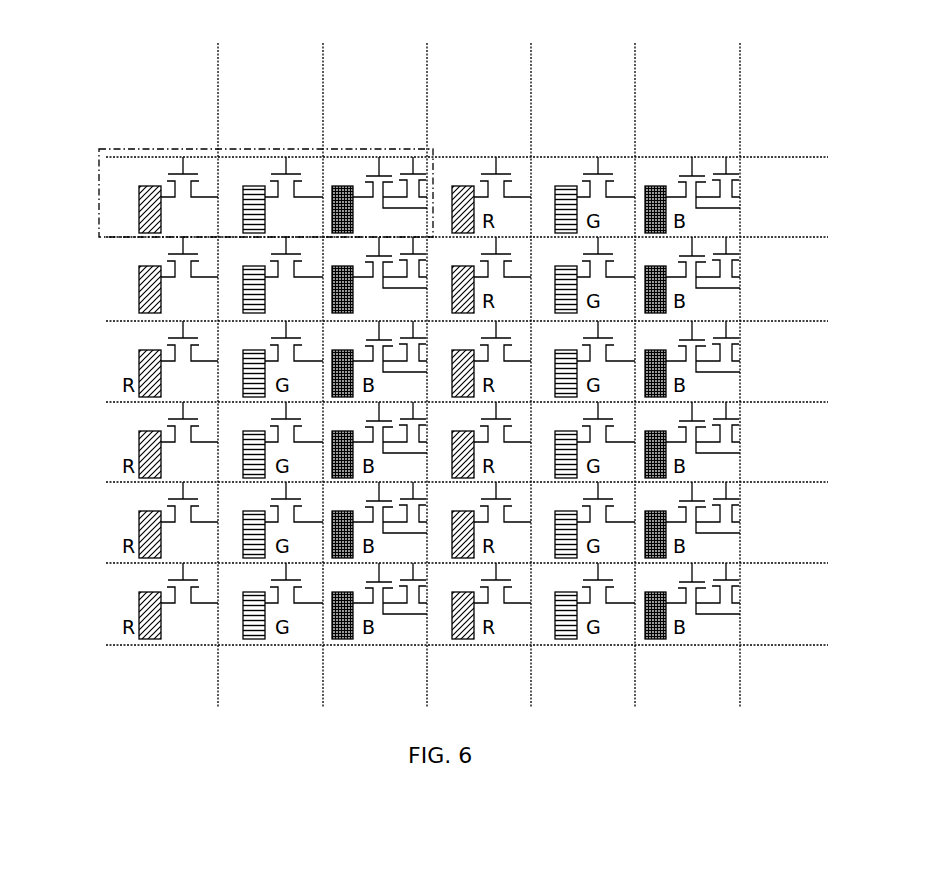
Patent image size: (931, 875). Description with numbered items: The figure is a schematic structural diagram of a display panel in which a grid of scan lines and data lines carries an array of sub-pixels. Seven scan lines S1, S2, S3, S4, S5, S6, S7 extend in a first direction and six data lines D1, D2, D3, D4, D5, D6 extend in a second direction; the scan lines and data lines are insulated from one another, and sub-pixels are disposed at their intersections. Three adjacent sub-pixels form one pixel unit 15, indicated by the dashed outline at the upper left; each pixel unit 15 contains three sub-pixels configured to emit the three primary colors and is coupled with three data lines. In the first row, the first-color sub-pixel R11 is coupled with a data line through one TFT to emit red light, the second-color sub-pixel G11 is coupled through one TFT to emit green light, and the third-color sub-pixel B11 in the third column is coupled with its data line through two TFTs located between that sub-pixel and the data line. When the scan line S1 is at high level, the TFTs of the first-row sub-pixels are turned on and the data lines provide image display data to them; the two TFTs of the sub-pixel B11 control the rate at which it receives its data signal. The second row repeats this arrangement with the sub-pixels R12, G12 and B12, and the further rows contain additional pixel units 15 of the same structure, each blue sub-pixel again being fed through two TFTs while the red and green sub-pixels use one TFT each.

The pixel unit 15 is at (123, 148).
The data line D1 is at (220, 357).
The data line D2 is at (323, 357).
The data line D3 is at (427, 357).
The data line D4 is at (532, 357).
The data line D5 is at (636, 357).
The data line D6 is at (742, 357).
The scan line S1 is at (445, 162).
The scan line S2 is at (445, 237).
The scan line S3 is at (445, 317).
The scan line S4 is at (445, 402).
The scan line S5 is at (445, 480).
The scan line S6 is at (445, 565).
The scan line S7 is at (445, 640).
The first-color sub-pixel R11 is at (163, 197).
The second-color sub-pixel G11 is at (283, 197).
The third-color sub-pixel B11 is at (379, 196).
The first-color sub-pixel R12 is at (161, 277).
The second-color sub-pixel G12 is at (283, 277).
The third-color sub-pixel B12 is at (379, 276).